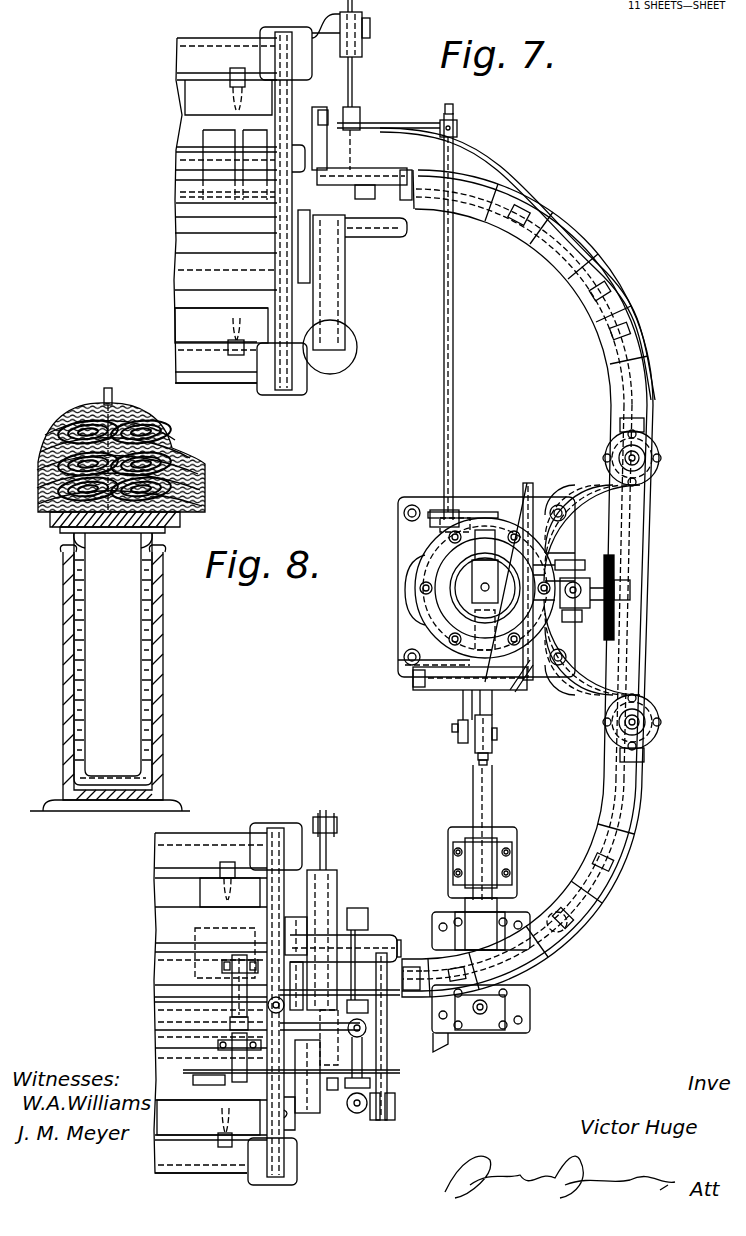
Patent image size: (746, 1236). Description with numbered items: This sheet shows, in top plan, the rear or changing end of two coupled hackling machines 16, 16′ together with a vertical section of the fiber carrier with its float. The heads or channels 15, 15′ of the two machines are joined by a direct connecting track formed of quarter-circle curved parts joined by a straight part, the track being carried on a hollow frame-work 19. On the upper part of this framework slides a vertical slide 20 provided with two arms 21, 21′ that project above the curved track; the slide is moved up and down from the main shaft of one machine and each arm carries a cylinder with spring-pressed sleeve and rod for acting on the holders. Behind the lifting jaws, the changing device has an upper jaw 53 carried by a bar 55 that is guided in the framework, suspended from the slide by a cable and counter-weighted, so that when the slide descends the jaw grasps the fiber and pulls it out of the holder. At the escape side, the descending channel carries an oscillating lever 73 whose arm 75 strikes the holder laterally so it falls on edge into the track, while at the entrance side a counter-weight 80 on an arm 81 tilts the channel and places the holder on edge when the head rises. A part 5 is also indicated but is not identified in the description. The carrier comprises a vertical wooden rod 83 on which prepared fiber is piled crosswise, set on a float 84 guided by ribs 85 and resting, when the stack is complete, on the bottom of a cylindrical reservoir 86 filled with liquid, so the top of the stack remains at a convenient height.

In FIG. 7, the guide wire 5 is at (385, 176).
In FIG. 7, the head or channel 15 is at (280, 213).
In FIG. 7, the hackling machine 16 is at (300, 43).
In FIG. 7, the hollow frame-work 19 is at (427, 575).
In FIG. 7, the slide 20 is at (490, 560).
In FIG. 7, the arm 21 is at (640, 680).
In FIG. 7, the arm 21′ is at (630, 520).
In FIG. 7, the upper jaw 53 is at (615, 600).
In FIG. 7, the bar 55 is at (620, 626).
In FIG. 7, the oscillating lever 73 is at (368, 918).
In FIG. 7, the arm 75 is at (366, 1034).
In FIG. 7, the counter-weight 80 is at (362, 52).
In FIG. 7, the arm 81 is at (355, 84).
In FIG. 8, the vertical wooden rod 83 is at (112, 395).
In FIG. 8, the float 84 is at (100, 585).
In FIG. 8, the ribs 85 is at (147, 660).
In FIG. 8, the cylindrical reservoir 86 is at (63, 650).
In FIG. 7, the head or channel 15′ is at (266, 997).
In FIG. 7, the hackling machine 16′ is at (291, 999).